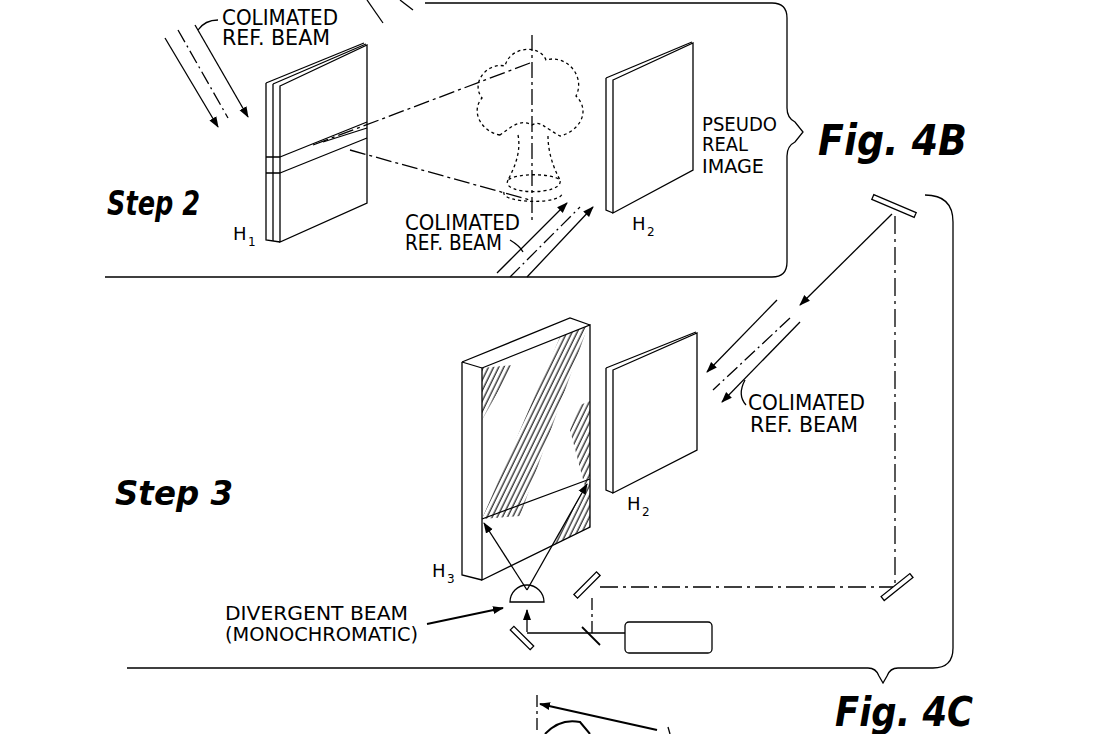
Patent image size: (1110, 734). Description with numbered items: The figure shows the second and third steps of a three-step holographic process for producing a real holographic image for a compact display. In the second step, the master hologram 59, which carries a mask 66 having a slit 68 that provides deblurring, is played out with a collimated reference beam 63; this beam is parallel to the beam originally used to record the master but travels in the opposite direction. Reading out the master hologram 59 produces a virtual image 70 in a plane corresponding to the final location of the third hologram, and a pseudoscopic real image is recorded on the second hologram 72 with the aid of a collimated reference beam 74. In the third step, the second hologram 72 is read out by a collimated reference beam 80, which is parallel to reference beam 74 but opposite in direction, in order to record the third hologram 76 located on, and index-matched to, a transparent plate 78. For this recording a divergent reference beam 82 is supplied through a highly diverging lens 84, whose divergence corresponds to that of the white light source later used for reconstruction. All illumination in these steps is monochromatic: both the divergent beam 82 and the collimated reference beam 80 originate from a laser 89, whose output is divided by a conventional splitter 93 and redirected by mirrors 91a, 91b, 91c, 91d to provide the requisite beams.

In FIG. 4B, the master hologram 59 is at (268, 163).
In FIG. 4B, the collimated reference beam 63 is at (178, 64).
In FIG. 4B, the mask 66 is at (365, 82).
In FIG. 4B, the slit 68 is at (361, 128).
In FIG. 4B, the virtual image 70 is at (511, 152).
In FIG. 4B, the H2 hologram 72 is at (692, 94).
In FIG. 4C, the H2 hologram 72 is at (688, 449).
In FIG. 4B, the collimated reference beam 74 is at (541, 253).
In FIG. 4C, the H3 hologram 76 is at (586, 350).
In FIG. 4C, the transparent plate 78 is at (468, 448).
In FIG. 4C, the collimated reference beam 80 is at (781, 338).
In FIG. 4C, the divergent reference beam 82 is at (515, 580).
In FIG. 4C, the diverging lens 84 is at (541, 592).
In FIG. 4C, the laser 89 is at (714, 640).
In FIG. 4C, the mirror 91a is at (516, 644).
In FIG. 4C, the mirror 91b is at (600, 580).
In FIG. 4C, the mirror 91c is at (892, 598).
In FIG. 4C, the mirror 91d is at (914, 216).
In FIG. 4C, the splitter 93 is at (590, 642).